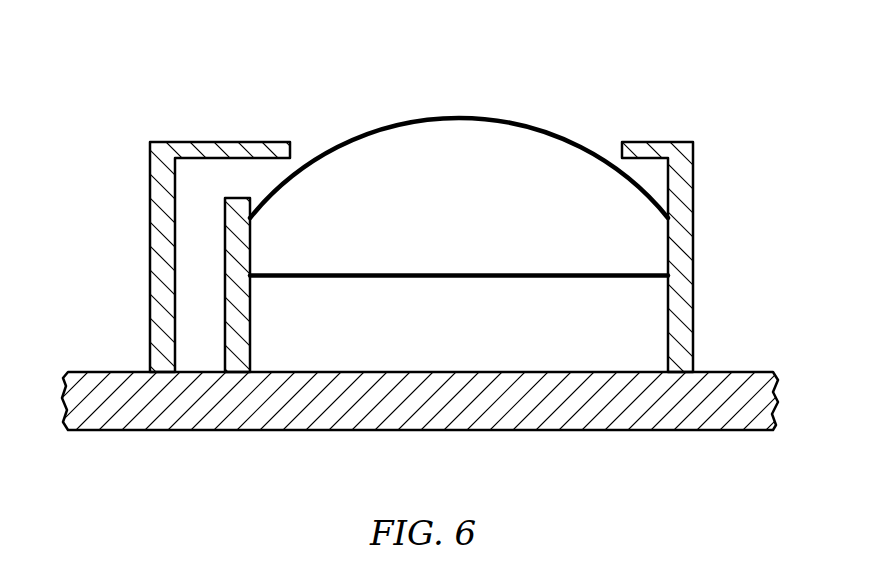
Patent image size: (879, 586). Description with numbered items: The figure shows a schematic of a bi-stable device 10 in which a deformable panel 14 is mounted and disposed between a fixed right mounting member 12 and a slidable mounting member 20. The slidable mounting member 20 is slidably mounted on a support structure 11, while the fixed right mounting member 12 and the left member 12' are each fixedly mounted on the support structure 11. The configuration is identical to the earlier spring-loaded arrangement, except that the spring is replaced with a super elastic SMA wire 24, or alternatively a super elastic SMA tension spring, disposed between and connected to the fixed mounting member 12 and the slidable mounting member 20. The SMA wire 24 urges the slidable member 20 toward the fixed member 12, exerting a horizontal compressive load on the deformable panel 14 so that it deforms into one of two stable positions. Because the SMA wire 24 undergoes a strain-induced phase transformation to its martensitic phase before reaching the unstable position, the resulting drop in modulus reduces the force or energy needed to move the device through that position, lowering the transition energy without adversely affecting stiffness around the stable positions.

The light emitting device assembly 10 is at (693, 88).
The support structure 11 is at (728, 431).
The fixed right mounting member 12 is at (628, 257).
The left member 12' is at (260, 257).
The deformable panel 14 is at (460, 117).
The slidable mounting member 20 is at (251, 314).
The super elastic SMA wire 24 is at (436, 272).